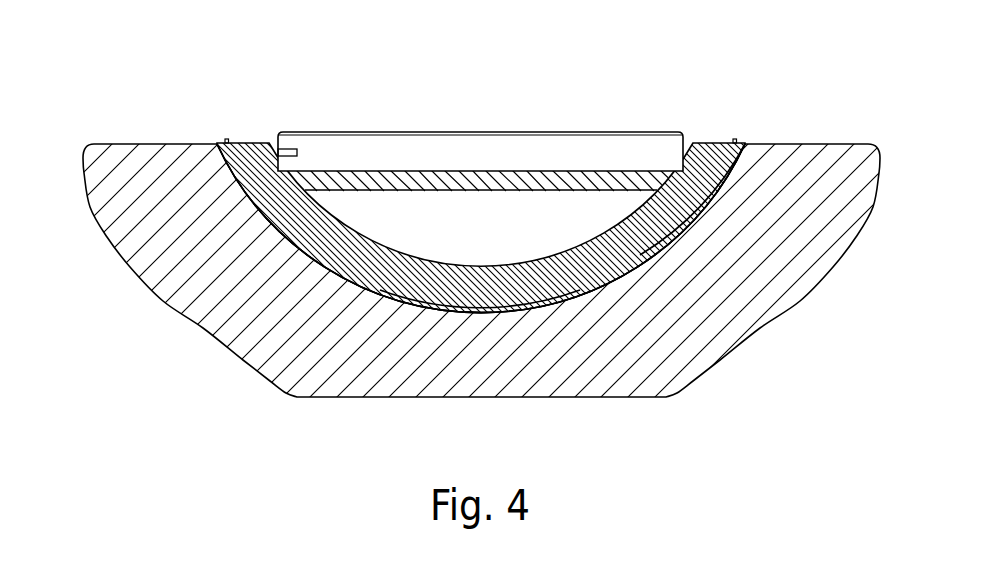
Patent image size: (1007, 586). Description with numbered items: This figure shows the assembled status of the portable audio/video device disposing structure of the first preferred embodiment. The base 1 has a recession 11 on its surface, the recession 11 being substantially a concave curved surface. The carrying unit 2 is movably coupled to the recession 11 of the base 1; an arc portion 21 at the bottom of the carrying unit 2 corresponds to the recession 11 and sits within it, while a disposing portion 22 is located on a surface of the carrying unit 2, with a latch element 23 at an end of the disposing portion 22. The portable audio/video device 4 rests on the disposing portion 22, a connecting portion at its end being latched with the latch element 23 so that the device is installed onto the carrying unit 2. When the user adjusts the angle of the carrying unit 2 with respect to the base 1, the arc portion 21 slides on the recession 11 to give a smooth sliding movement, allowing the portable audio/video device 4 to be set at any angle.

The base 1 is at (124, 257).
The recession 11 is at (497, 311).
The carrying unit 2 is at (756, 133).
The arc portion 21 is at (390, 273).
The disposing portion 22 is at (628, 172).
The latch element 23 is at (289, 152).
The portable audio/video device 4 is at (595, 132).